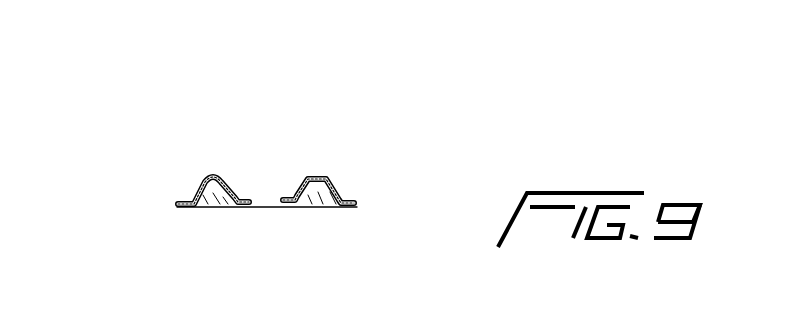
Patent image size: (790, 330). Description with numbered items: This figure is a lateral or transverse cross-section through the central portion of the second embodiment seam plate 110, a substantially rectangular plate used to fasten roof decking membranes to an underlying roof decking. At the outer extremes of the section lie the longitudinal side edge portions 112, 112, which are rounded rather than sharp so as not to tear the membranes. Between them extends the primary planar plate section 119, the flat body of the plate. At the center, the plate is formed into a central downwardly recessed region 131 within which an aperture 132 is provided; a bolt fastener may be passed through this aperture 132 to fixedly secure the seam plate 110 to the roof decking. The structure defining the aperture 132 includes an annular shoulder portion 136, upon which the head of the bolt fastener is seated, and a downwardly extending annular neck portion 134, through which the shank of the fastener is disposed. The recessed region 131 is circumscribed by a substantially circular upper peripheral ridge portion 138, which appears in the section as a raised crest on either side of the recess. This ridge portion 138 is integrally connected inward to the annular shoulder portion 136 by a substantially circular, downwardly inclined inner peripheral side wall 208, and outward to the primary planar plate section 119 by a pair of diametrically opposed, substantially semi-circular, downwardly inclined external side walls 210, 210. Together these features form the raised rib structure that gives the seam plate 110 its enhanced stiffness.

The seam plate 110 is at (403, 95).
The longitudinal side edge portion 112 is at (178, 204).
The primary planar plate section 119 is at (234, 207).
The central downwardly recessed region 131 is at (272, 186).
The aperture 132 is at (267, 197).
The annular neck portion 134 is at (281, 207).
The annular shoulder portion 136 is at (243, 197).
The upper peripheral ridge portion 138 is at (212, 174).
The inner peripheral side wall 208 is at (202, 208).
The external side wall 210 is at (338, 180).